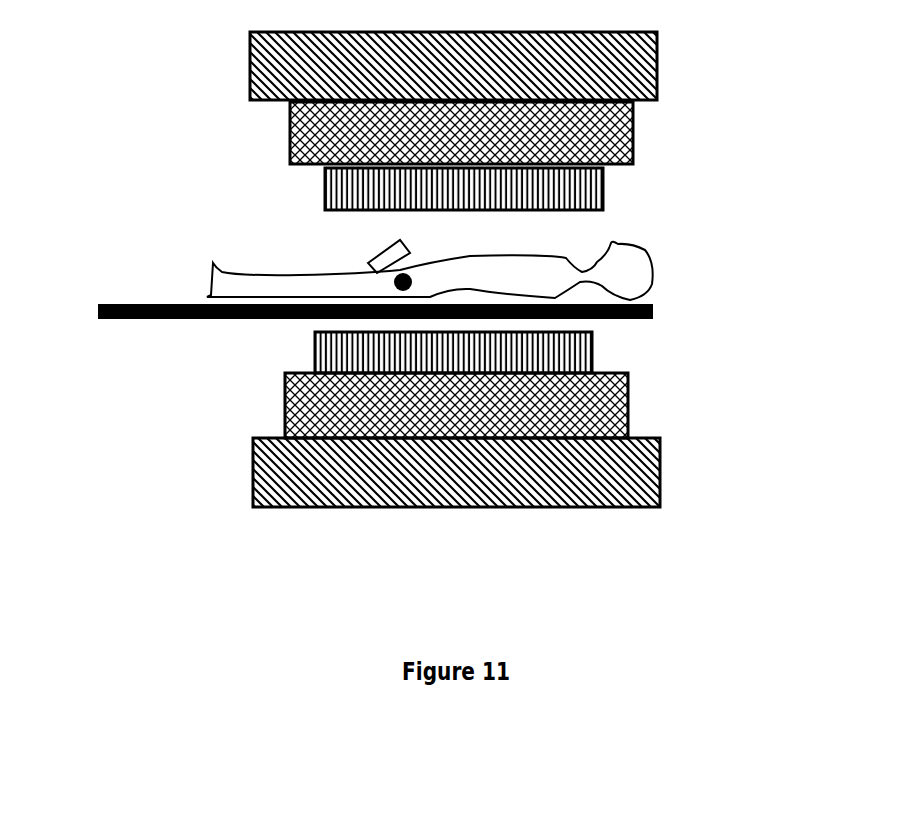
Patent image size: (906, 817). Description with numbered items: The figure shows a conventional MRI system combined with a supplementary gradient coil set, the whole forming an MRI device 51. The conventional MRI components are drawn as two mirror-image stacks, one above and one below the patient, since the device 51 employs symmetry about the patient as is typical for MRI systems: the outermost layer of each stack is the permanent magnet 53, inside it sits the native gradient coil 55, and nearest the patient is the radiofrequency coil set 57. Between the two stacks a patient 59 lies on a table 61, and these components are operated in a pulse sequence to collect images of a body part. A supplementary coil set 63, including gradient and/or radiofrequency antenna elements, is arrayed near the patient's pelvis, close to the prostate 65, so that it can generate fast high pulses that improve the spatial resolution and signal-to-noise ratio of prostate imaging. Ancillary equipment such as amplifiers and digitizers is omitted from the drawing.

The MRI device 51 is at (464, 567).
The permanent magnet 53 is at (672, 67).
The native gradient coil 55 is at (645, 140).
The radiofrequency coil set 57 is at (617, 187).
The patient 59 is at (668, 259).
The table 61 is at (145, 325).
The supplementary coil set 63 is at (367, 248).
The prostate 65 is at (390, 287).